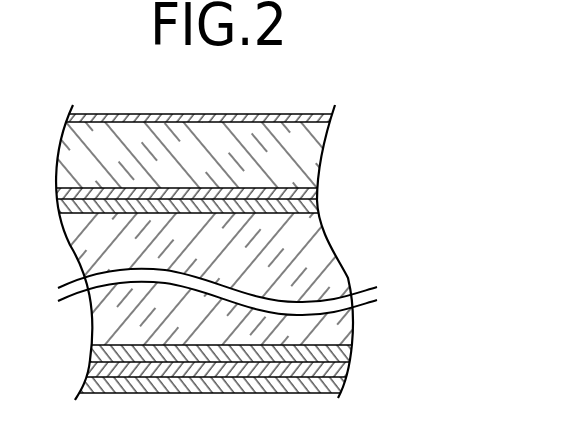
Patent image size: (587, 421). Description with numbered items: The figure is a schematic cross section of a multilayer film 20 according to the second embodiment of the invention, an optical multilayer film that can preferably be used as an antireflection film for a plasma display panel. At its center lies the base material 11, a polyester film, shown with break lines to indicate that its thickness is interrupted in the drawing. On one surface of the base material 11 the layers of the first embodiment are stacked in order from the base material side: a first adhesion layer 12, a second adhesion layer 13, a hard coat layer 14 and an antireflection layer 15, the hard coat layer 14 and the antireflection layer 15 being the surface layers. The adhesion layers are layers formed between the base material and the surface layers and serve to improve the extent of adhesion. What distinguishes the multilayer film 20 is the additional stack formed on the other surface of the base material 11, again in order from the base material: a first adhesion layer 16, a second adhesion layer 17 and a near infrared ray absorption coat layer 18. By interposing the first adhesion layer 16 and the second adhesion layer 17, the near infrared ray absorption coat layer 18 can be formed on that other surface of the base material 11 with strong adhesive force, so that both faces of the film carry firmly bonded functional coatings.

The multilayer film 20 is at (256, 102).
The antireflection layer 15 is at (333, 120).
The hard coat layer 14 is at (320, 161).
The second adhesion layer 13 is at (320, 196).
The first adhesion layer 12 is at (321, 212).
The base material 11 is at (334, 272).
The first adhesion layer 16 is at (346, 340).
The second adhesion layer 17 is at (348, 374).
The near infrared ray absorption coat layer 18 is at (340, 388).